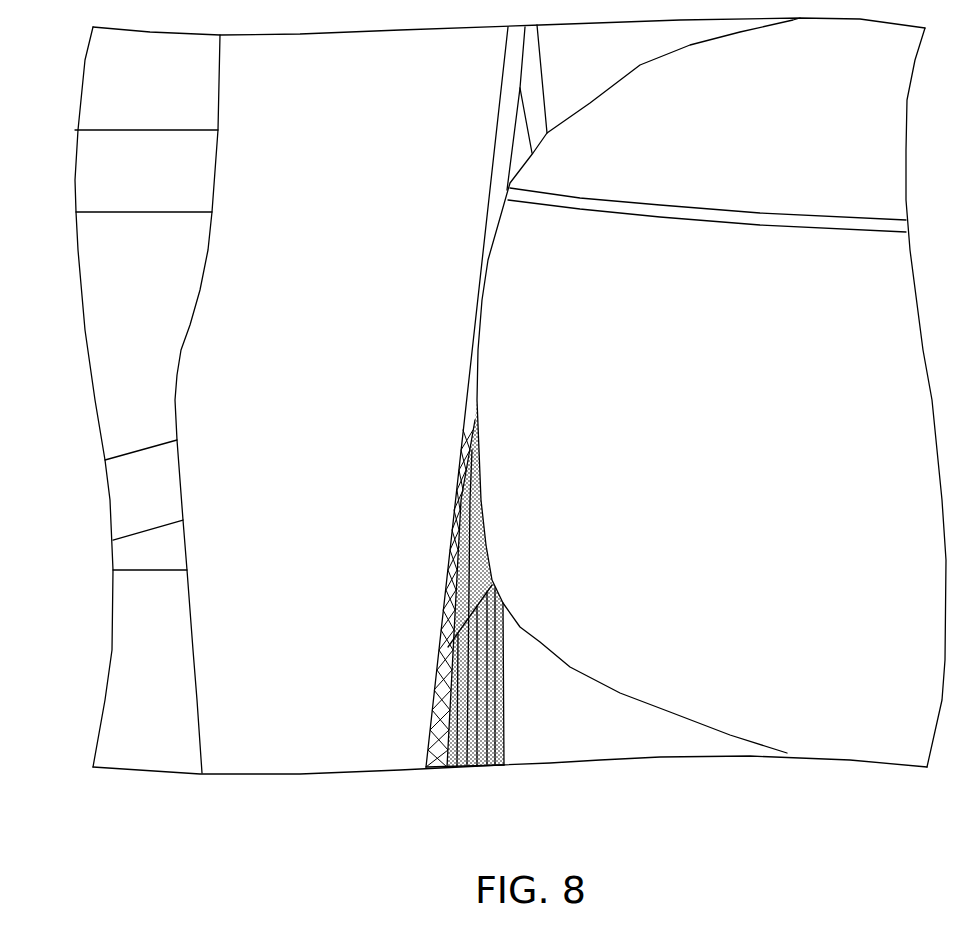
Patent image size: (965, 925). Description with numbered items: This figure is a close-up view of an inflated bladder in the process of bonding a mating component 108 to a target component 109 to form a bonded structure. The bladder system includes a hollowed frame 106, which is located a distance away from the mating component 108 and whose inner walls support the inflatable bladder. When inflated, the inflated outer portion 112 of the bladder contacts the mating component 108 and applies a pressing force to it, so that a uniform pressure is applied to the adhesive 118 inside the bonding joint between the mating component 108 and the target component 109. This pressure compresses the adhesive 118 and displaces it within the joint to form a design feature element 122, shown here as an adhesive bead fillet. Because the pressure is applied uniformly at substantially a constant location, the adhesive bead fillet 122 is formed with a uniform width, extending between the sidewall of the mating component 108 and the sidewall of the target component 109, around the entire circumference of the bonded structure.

The hollowed frame 106 is at (598, 757).
The mating component 108 is at (486, 768).
The target component 109 is at (311, 752).
The inflated outer portion 112 is at (789, 684).
The adhesive 118 is at (448, 612).
The design feature element 122 is at (462, 438).